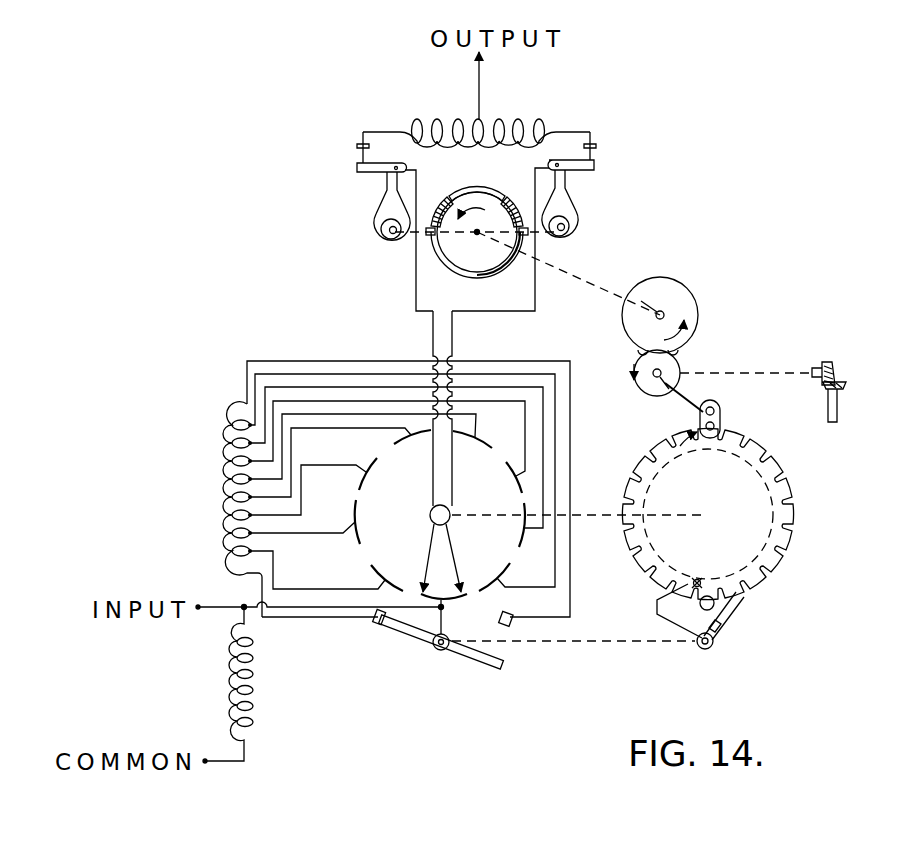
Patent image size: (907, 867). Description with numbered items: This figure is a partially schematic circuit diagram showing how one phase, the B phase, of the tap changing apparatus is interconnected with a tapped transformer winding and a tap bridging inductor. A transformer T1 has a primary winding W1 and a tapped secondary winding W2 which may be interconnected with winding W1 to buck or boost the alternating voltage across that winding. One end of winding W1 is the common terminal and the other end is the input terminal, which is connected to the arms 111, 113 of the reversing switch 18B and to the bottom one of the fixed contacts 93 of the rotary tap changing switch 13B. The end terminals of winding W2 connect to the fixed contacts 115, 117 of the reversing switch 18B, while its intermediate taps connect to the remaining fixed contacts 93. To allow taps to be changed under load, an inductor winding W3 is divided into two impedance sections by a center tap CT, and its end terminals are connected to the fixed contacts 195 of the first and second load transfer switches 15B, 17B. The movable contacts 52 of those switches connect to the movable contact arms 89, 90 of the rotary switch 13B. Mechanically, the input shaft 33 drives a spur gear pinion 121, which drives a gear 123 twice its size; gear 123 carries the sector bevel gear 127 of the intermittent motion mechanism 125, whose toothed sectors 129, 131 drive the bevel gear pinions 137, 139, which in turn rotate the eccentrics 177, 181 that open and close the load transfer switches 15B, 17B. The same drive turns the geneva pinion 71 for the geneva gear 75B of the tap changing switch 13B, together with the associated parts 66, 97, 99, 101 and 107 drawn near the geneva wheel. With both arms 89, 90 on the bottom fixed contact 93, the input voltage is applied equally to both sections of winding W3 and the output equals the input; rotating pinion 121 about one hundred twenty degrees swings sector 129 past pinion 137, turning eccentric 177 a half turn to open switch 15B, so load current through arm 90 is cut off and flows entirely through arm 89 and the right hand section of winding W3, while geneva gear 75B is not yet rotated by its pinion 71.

The inductor winding W3 is at (439, 122).
The center tap CT is at (483, 120).
The fixed contacts 195 is at (359, 148).
The movable contacts 52 is at (369, 172).
The first load transfer switch 15B is at (346, 177).
The second load transfer switch 17B is at (616, 160).
The eccentric 177 is at (385, 243).
The eccentric 181 is at (577, 228).
The bevel gear pinion 137 is at (477, 232).
The sector bevel gear 127 is at (461, 275).
The bevel gear pinion 139 is at (501, 275).
The intermittent motion mechanism 125 is at (484, 190).
The toothed sector 129 is at (449, 196).
The toothed sector 131 is at (508, 199).
The transformer T1 is at (199, 582).
The tapped secondary winding W2 is at (232, 449).
The primary winding W1 is at (253, 677).
The fixed contacts 93 is at (478, 437).
The rotary tap changing switch 13B is at (498, 484).
The movable contact arm 89 is at (456, 546).
The movable contact arm 90 is at (435, 548).
The reversing switch 18B is at (447, 676).
The arm 111 is at (409, 642).
The fixed contact 115 is at (385, 625).
The arm 113 is at (489, 668).
The fixed contact 117 is at (511, 622).
The gear 123 is at (699, 294).
The spur gear pinion 121 is at (680, 360).
The connecting rod 66 is at (694, 398).
The geneva pinion 71 is at (724, 413).
The input shaft 33 is at (838, 410).
The geneva gear 75B is at (748, 510).
The pin 97 is at (697, 580).
The detent lever 99 is at (660, 596).
The roller 101 is at (729, 598).
The pivot 107 is at (716, 634).